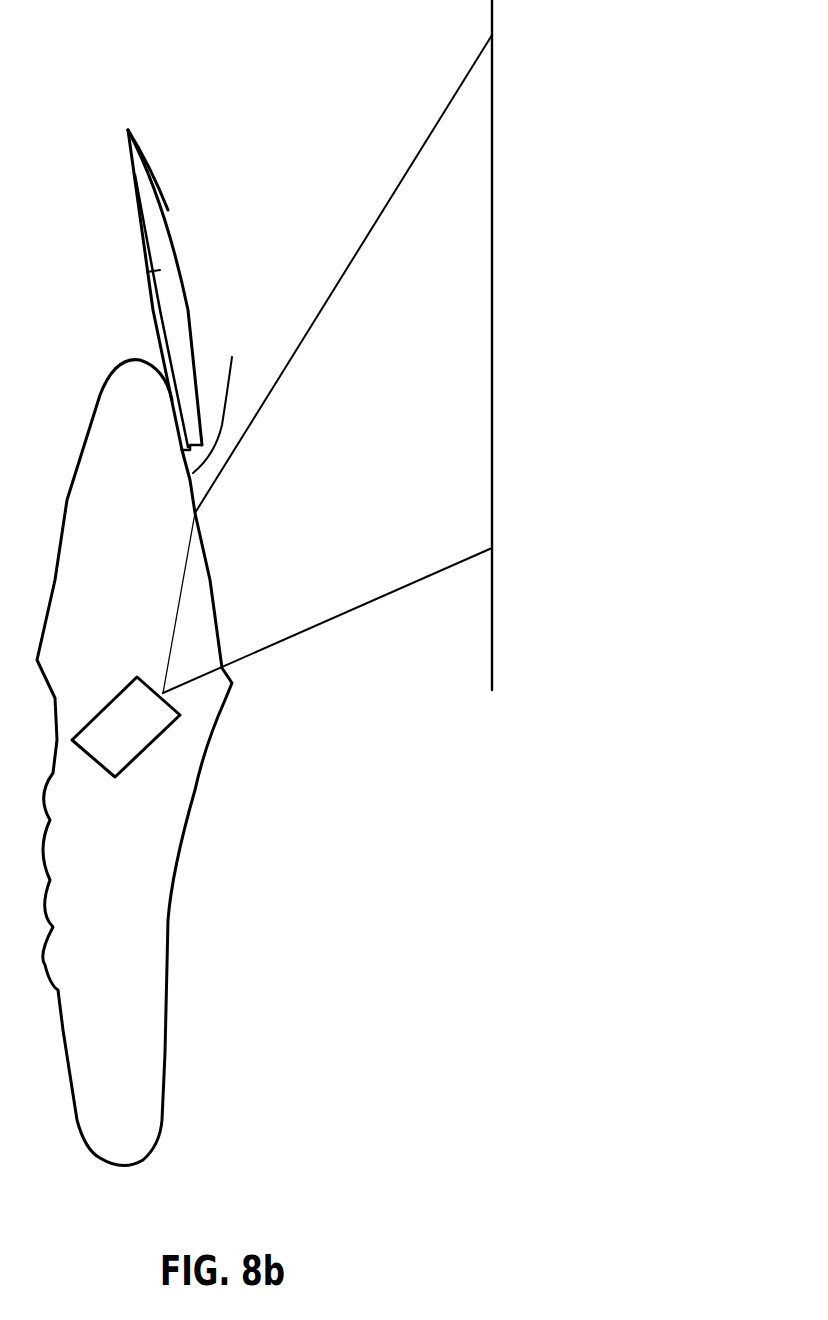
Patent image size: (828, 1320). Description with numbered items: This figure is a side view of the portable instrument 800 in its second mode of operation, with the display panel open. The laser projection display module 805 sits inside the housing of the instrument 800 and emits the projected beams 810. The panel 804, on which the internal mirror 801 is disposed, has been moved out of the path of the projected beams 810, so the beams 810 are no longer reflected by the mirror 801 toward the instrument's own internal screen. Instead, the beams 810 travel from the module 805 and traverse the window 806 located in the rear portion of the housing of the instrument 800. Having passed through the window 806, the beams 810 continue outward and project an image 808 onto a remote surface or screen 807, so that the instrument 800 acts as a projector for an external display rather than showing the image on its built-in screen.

The portable instrument 800 is at (165, 1100).
The internal mirror 801 is at (157, 338).
The panel 804 is at (168, 208).
The module 805 is at (118, 778).
The window 806 is at (230, 394).
The remote surface or screen 807 is at (492, 674).
The image 808 is at (492, 310).
The projected beams 810 is at (176, 628).